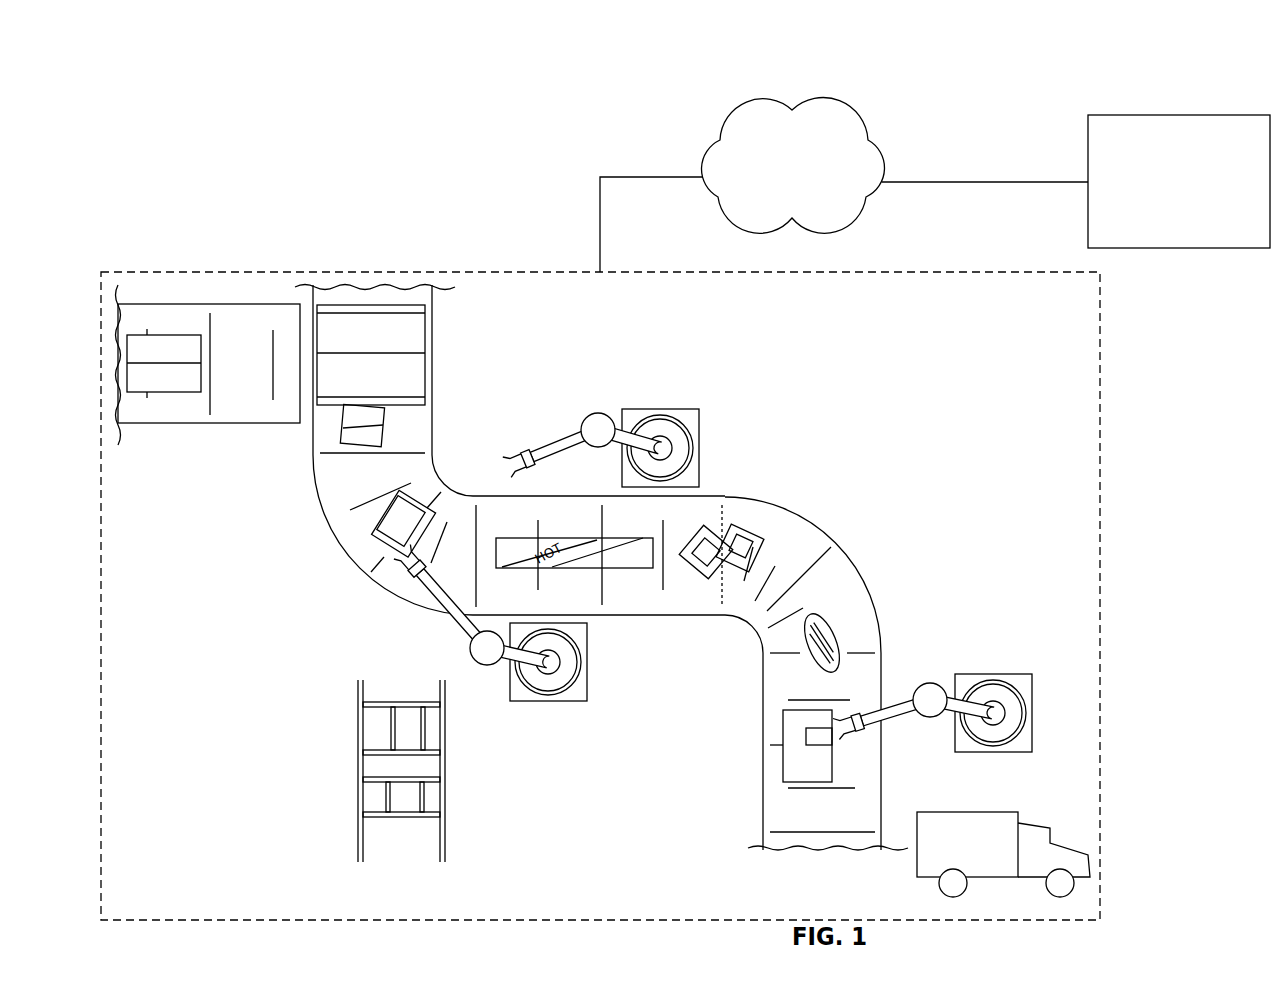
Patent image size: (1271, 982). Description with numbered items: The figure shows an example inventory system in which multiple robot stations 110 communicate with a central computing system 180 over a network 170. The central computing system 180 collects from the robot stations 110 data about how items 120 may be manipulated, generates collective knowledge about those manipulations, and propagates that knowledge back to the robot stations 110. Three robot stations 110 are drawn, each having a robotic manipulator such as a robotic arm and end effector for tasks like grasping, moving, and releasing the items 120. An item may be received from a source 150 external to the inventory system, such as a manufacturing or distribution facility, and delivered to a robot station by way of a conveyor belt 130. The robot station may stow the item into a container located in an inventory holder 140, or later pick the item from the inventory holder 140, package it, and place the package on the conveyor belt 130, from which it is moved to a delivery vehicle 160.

The robot station 110 is at (692, 435).
The item 120 is at (745, 540).
The conveyor belt 130 is at (435, 427).
The inventory holder 140 is at (445, 842).
The source 150 is at (215, 423).
The delivery vehicle 160 is at (1087, 857).
The network 170 is at (796, 104).
The central computing system 180 is at (1150, 116).